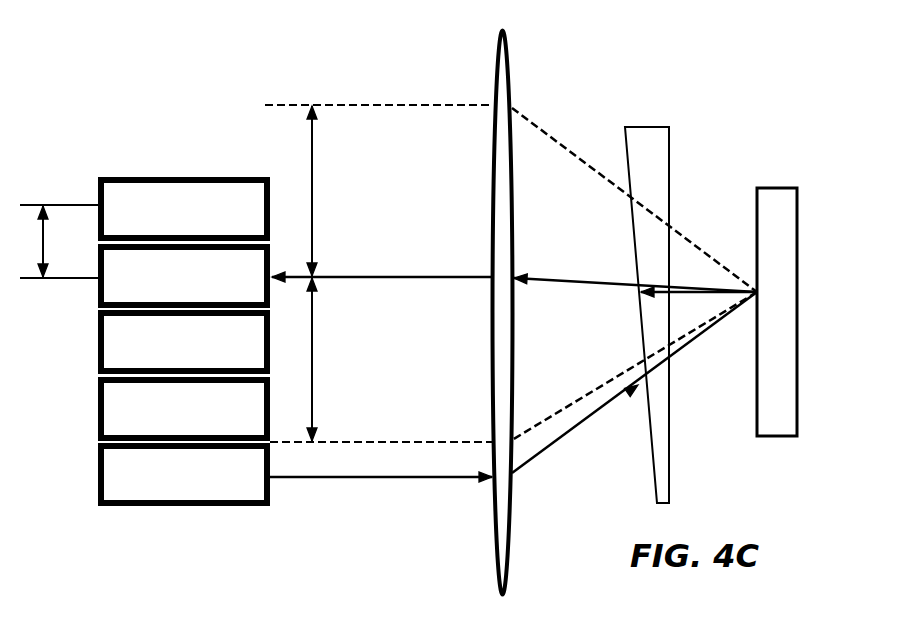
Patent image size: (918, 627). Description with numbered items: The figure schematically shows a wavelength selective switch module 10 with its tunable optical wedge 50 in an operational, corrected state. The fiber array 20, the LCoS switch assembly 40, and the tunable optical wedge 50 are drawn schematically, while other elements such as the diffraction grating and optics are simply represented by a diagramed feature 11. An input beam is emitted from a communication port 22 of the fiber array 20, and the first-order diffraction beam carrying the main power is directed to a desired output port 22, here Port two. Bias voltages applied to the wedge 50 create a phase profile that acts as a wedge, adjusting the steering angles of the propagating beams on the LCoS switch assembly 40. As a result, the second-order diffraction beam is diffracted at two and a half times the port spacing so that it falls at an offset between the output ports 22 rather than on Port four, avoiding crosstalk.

The WSS module 10 is at (139, 82).
The diagramed feature 11 is at (494, 46).
The fiber array 20 is at (163, 512).
The port 22 is at (98, 462).
The LCoS switch assembly 40 is at (779, 187).
The tunable optical wedge 50 is at (650, 127).